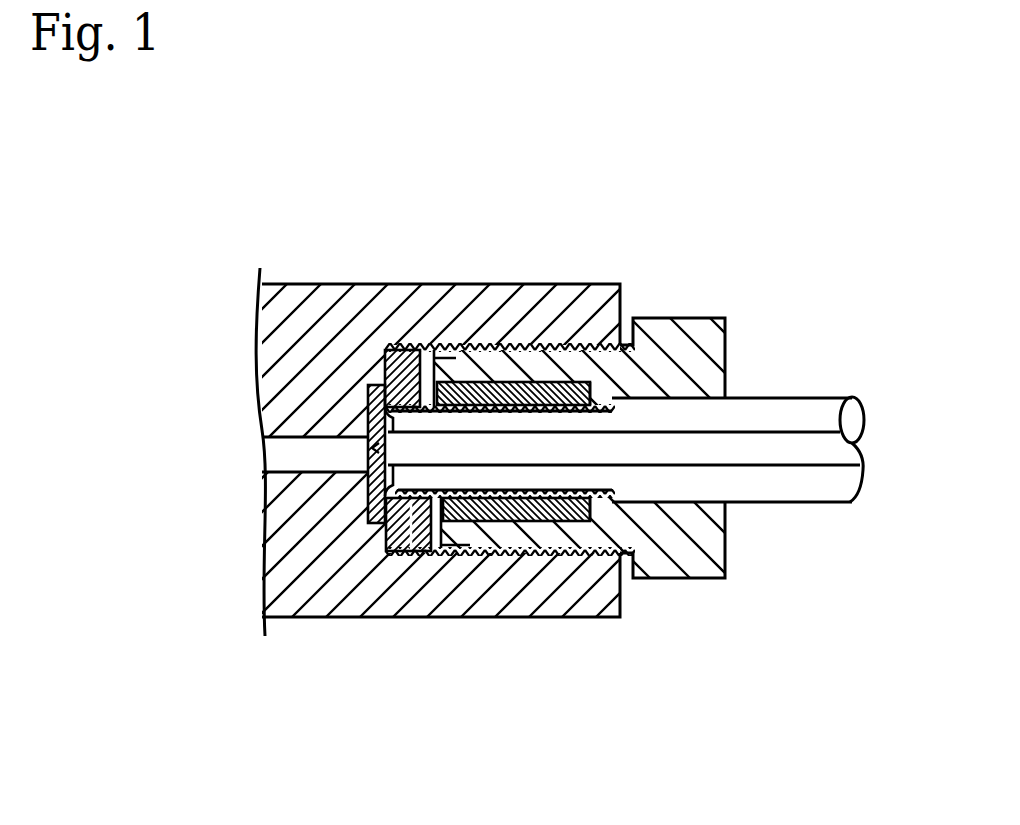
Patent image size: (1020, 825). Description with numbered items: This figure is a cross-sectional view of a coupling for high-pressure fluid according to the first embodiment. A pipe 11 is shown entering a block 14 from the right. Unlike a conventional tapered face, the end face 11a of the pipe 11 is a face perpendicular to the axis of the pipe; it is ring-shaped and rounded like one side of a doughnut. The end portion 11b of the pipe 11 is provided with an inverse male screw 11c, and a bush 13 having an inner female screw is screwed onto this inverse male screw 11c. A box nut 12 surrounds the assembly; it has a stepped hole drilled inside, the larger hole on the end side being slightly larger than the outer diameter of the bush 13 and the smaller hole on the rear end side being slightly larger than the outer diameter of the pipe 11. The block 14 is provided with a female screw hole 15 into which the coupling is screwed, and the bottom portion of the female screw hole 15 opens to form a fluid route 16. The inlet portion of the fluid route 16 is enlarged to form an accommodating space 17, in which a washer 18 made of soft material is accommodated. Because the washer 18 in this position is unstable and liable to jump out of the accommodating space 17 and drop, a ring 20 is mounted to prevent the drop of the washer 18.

The pipe 11 is at (790, 408).
The end face 11a is at (375, 525).
The end portion 11b is at (413, 545).
The inverse male screw 11c is at (493, 513).
The box nut 12 is at (712, 556).
The bush 13 is at (557, 382).
The block 14 is at (333, 296).
The female screw hole 15 is at (427, 403).
The fluid route 16 is at (290, 462).
The accommodating space 17 is at (372, 448).
The washer 18 is at (367, 413).
The ring 20 is at (392, 548).